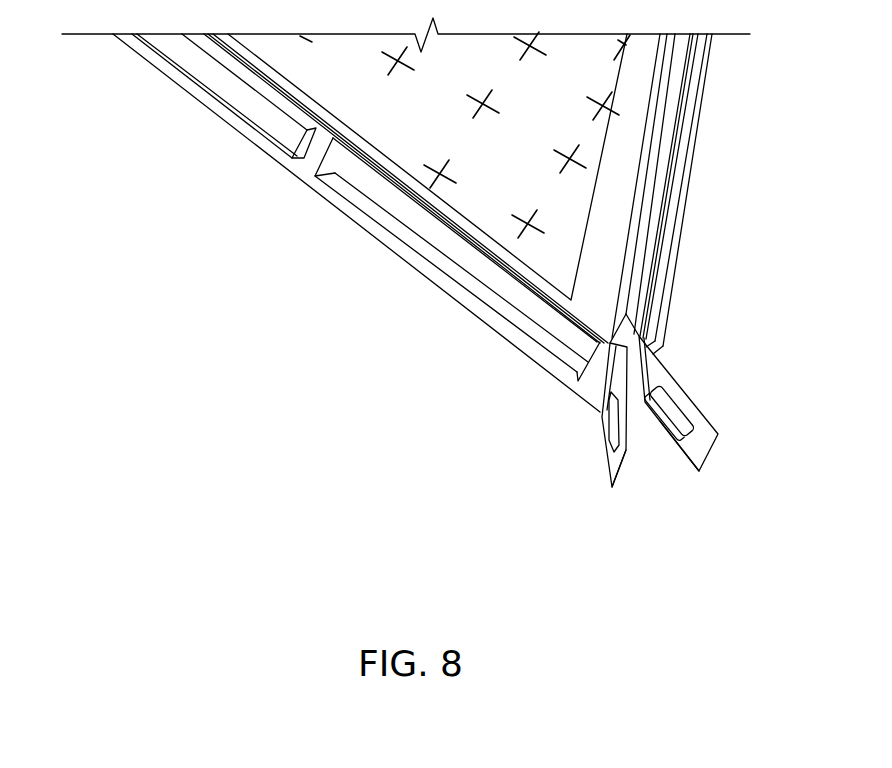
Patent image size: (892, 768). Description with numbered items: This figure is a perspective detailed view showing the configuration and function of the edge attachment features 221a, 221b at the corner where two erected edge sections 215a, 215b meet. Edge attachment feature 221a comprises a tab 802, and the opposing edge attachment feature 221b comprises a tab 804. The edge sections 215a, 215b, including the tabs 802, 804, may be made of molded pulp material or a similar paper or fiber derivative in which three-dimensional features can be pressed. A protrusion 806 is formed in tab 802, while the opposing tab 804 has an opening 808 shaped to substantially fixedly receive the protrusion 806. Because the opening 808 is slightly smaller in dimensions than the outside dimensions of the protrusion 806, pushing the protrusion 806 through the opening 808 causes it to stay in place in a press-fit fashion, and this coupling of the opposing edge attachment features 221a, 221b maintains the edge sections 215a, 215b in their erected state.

The edge section 215b is at (397, 257).
The edge section 215a is at (677, 296).
The edge attachment feature 221b is at (571, 454).
The edge attachment feature 221a is at (723, 439).
The opening 808 is at (612, 428).
The protrusion 806 is at (670, 406).
The tab 804 is at (628, 490).
The tab 802 is at (697, 452).